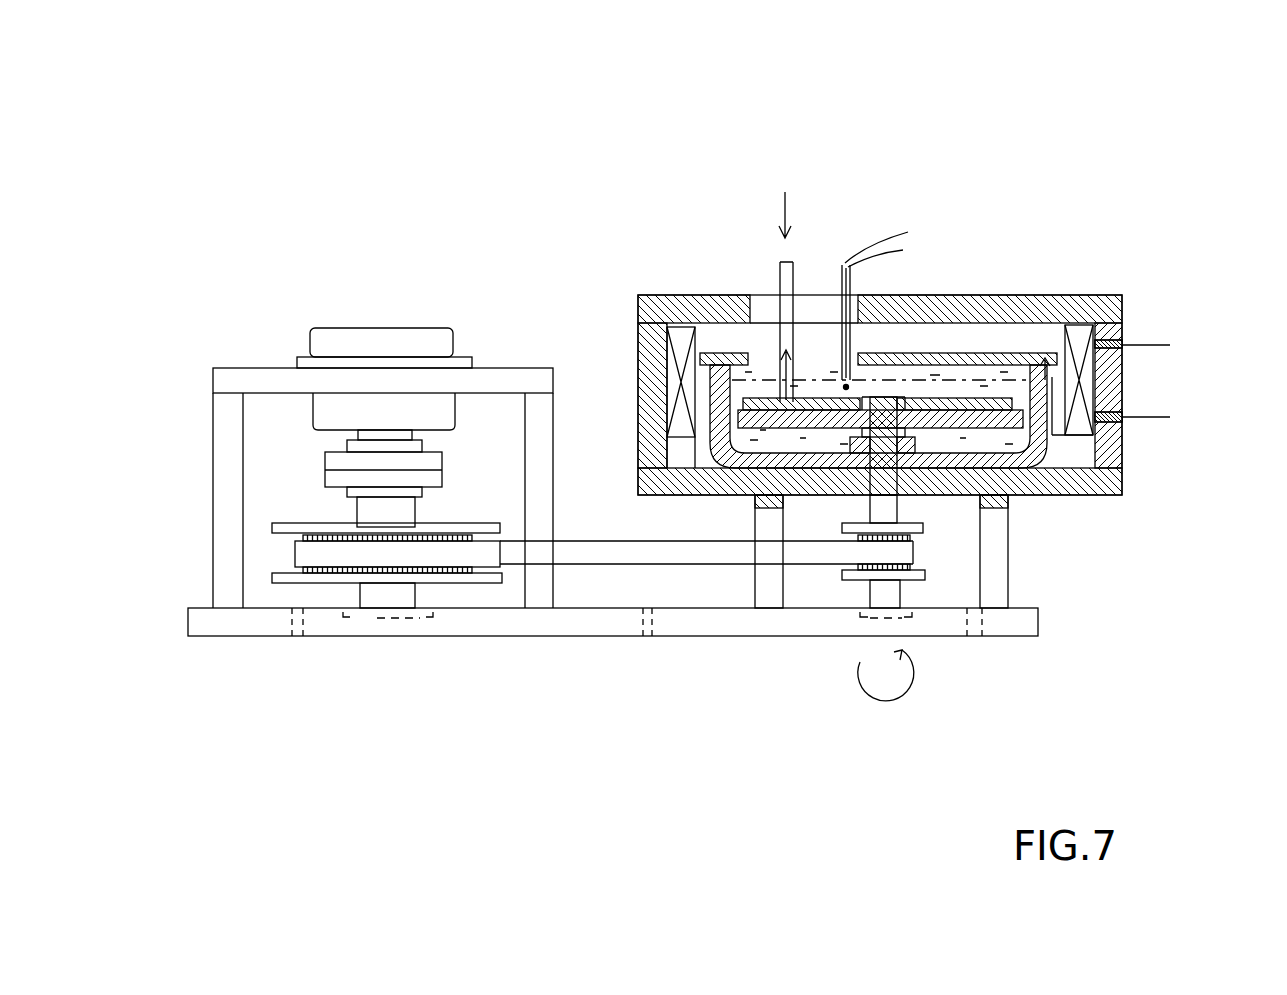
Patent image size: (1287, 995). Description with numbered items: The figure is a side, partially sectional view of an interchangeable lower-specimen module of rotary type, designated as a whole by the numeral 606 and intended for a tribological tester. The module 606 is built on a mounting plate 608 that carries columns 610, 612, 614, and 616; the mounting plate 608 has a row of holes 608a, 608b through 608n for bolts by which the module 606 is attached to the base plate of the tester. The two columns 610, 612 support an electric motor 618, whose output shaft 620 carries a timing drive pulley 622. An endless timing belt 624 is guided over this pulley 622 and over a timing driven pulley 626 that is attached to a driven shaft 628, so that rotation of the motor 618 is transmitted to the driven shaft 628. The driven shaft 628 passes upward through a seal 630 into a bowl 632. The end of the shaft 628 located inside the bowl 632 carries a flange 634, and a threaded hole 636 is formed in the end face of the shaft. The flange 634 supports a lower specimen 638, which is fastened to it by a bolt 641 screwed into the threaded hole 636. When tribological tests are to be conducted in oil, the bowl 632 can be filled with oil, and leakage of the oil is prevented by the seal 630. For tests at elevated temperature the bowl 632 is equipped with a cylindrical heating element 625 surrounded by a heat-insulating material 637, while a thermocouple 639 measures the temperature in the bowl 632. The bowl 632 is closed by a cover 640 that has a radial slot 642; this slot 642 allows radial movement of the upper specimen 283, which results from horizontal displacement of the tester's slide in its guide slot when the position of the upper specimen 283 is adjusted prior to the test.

The lower-specimen replaceable module 606 is at (1028, 148).
The mounting plate 608 is at (437, 638).
The hole 608a is at (297, 640).
The hole 608b is at (648, 636).
The hole 608n is at (975, 636).
The column 610 is at (215, 492).
The column 612 is at (548, 598).
The column 614 is at (770, 588).
The column 616 is at (887, 510).
The electric motor 618 is at (390, 327).
The output shaft 620 is at (353, 437).
The timing drive pulley 622 is at (270, 575).
The endless timing belt 624 is at (682, 555).
The cylindrical heating element 625 is at (660, 297).
The timing driven pulley 626 is at (913, 580).
The driven shaft 628 is at (900, 497).
The seal 630 is at (880, 455).
The bowl 632 is at (1046, 356).
The flange 634 is at (957, 415).
The threaded hole 636 is at (900, 483).
The heat-insulating material 637 is at (650, 380).
The lower specimen 638 is at (917, 400).
The thermocouple 639 is at (845, 262).
The cover 640 is at (685, 298).
The bolt 641 is at (882, 397).
The radial slot 642 is at (763, 303).
The upper specimen 283 is at (790, 265).